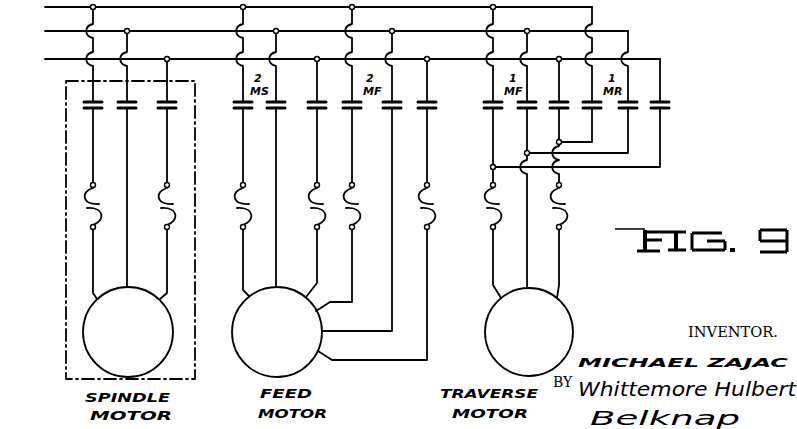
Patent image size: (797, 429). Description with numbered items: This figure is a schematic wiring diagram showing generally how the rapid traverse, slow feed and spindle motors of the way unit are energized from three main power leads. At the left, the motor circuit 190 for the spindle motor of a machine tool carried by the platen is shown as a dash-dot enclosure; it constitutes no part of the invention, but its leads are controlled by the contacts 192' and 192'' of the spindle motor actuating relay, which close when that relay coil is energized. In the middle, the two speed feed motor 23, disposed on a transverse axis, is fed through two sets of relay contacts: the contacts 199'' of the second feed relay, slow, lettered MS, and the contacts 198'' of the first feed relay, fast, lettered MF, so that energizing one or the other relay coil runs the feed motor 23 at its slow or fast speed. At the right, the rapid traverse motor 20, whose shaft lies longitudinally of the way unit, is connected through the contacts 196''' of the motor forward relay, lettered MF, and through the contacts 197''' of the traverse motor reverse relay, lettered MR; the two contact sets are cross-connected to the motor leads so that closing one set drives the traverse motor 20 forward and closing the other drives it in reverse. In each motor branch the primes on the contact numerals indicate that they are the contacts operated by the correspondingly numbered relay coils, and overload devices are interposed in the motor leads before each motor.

The contact of motor actuating relay 192' is at (110, 97).
The contact of motor actuating relay 192'' is at (184, 86).
The contacts of second feed relay, slow (2MS) 199'' is at (280, 129).
The contacts of first feed relay, fast (2MF) 198'' is at (406, 136).
The contacts of motor forward relay (1MF) 196''' is at (507, 122).
The contacts of traverse motor reverse relay (1MR) 197''' is at (644, 119).
The motor circuit 190 is at (197, 335).
The two speed feed motor 23 is at (312, 370).
The rapid traverse motor 20 is at (574, 308).